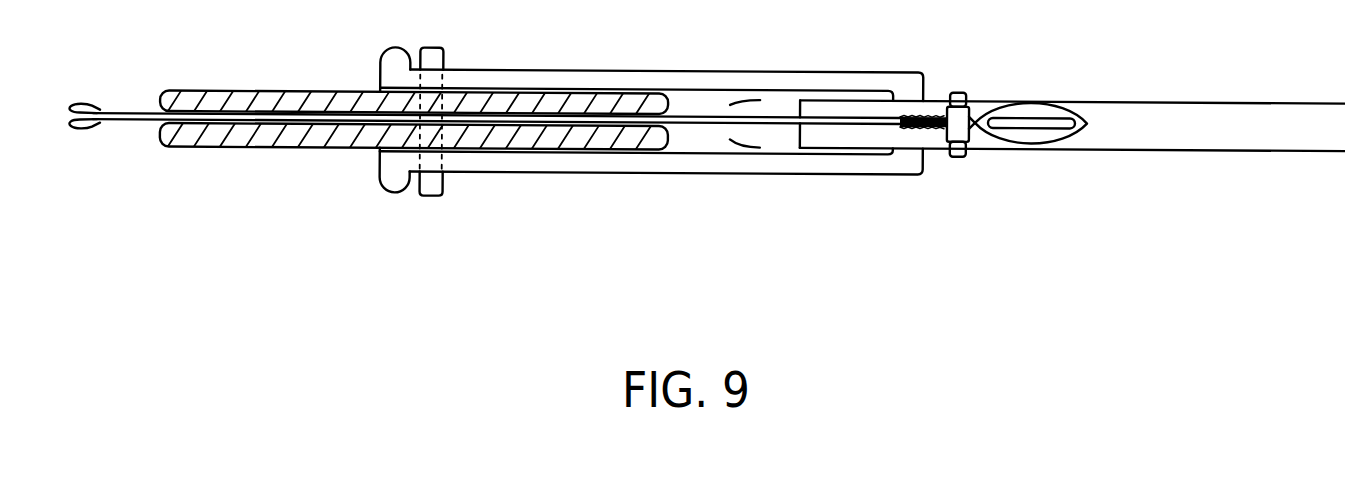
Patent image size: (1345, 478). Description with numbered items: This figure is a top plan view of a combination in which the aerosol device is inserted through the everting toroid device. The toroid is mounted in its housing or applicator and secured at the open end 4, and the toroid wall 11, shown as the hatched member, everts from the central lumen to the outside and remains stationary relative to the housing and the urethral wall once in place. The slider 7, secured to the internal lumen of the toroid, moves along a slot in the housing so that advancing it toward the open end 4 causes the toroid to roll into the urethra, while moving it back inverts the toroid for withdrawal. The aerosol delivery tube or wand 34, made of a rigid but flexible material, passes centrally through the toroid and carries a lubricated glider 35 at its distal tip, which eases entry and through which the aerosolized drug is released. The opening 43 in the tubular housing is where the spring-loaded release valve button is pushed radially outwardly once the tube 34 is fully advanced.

The lubricated glider 35 is at (80, 106).
The toroid wall 11 is at (245, 89).
The open end 4 is at (378, 171).
The slider 7 is at (433, 186).
The aerosol delivery tube 34 is at (710, 111).
The opening 43 is at (966, 95).